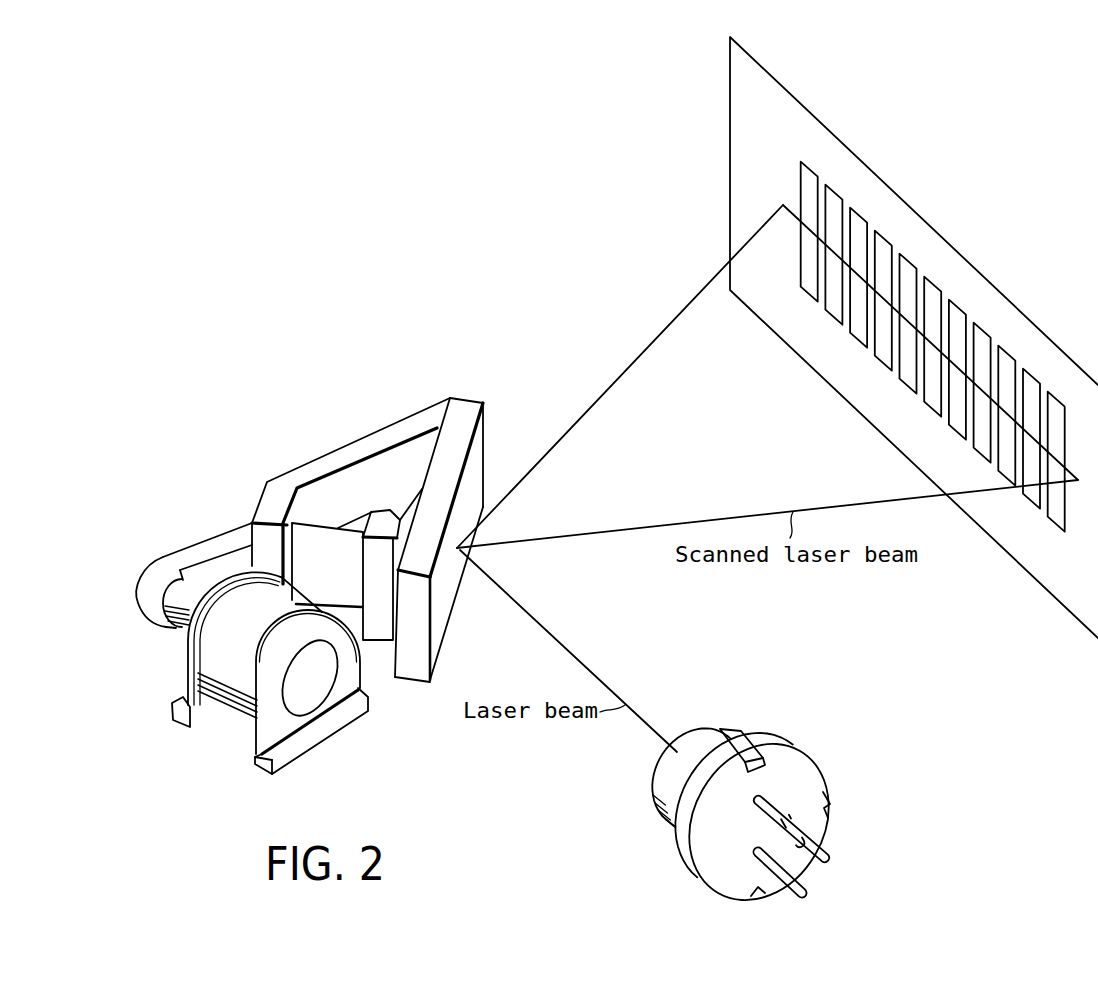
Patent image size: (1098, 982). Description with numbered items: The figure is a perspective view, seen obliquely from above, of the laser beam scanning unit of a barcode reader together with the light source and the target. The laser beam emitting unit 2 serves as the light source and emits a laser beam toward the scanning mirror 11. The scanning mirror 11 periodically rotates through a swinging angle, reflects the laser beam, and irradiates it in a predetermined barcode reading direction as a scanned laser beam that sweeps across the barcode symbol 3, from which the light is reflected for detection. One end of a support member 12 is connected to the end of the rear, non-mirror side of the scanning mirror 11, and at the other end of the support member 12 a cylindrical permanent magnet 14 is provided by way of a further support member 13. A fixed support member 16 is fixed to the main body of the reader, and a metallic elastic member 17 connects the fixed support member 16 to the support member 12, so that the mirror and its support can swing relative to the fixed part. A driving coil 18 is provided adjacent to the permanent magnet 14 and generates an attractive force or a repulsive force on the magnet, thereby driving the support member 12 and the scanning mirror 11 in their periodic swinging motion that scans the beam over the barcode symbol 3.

The laser beam emitting unit 2 is at (787, 754).
The barcode symbol 3 is at (987, 280).
The scanning mirror 11 is at (465, 401).
The support member 12 is at (268, 486).
The support member 13 is at (184, 557).
The cylindrical permanent magnet 14 is at (186, 630).
The fixed support member 16 is at (385, 519).
The metallic elastic member 17 is at (327, 526).
The driving coil 18 is at (237, 695).